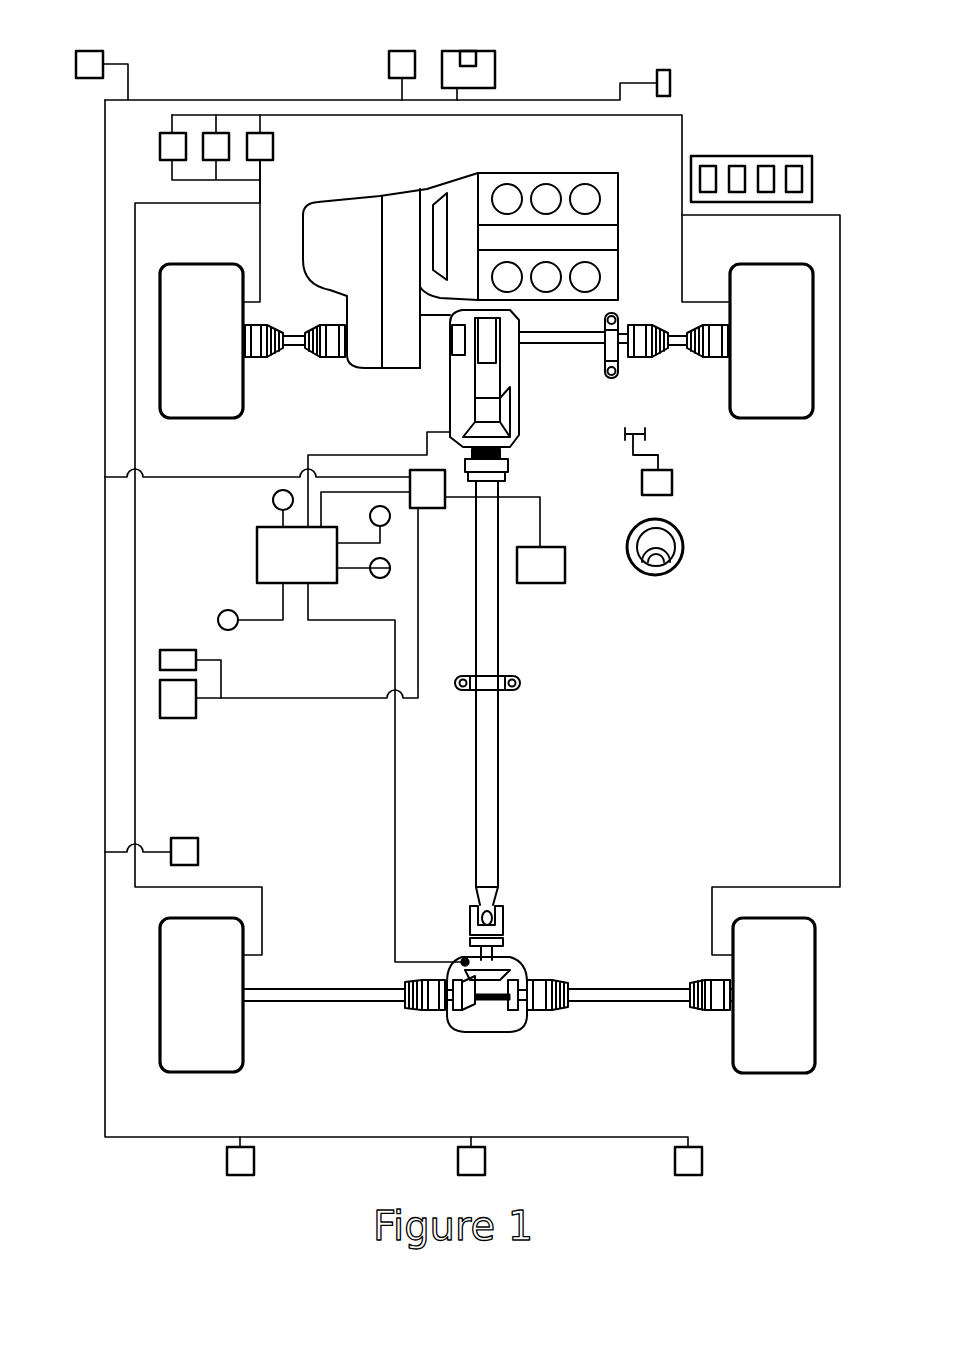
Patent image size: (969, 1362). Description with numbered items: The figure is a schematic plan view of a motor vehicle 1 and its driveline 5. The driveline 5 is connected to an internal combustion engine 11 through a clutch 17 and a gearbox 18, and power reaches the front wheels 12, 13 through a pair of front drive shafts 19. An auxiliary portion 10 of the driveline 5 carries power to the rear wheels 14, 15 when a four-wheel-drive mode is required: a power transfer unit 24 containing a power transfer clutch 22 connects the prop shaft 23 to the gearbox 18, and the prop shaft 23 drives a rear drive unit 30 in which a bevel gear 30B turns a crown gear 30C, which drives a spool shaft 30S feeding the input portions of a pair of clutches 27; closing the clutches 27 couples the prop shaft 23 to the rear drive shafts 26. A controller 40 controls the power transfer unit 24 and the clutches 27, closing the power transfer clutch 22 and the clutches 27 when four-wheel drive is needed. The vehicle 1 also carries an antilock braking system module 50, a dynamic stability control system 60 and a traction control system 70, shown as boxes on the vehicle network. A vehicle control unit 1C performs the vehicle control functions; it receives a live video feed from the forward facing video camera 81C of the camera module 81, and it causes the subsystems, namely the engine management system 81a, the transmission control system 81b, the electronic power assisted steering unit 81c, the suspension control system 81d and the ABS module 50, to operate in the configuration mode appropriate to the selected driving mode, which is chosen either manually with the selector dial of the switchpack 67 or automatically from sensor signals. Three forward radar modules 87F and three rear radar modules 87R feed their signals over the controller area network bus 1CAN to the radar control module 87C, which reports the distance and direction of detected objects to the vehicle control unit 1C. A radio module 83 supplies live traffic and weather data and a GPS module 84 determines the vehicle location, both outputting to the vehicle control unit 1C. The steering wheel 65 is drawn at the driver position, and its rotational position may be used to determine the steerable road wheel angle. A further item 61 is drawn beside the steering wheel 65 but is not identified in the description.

The motor vehicle 1 is at (730, 78).
The vehicle control unit 1C is at (432, 503).
The controller area network bus 1CAN is at (105, 320).
The driveline 5 is at (320, 734).
The auxiliary portion 10 is at (519, 405).
The internal combustion engine 11 is at (612, 187).
The front wheel 12 is at (200, 285).
The front wheel 13 is at (773, 285).
The rear wheel 14 is at (200, 1052).
The rear wheel 15 is at (773, 1045).
The clutch 17 is at (473, 247).
The gearbox 18 is at (403, 215).
The front drive shafts 19 is at (294, 345).
The power transfer clutch 22 is at (458, 342).
The prop shaft 23 is at (487, 625).
The power transfer unit 24 is at (520, 388).
The rear drive shafts 26 is at (355, 1001).
The clutches 27 is at (455, 1010).
The rear drive unit 30 is at (499, 1010).
The bevel gear 30B is at (510, 973).
The crown gear 30C is at (472, 1010).
The spool shaft 30S is at (488, 999).
The controller 40 is at (257, 548).
The antilock braking system module 50 is at (212, 137).
The dynamic stability control system 60 is at (263, 137).
The gear selector 61 is at (673, 484).
The steering wheel 65 is at (673, 562).
The switchpack 67 is at (556, 577).
The traction control system 70 is at (163, 145).
The camera module 81 is at (495, 70).
The forward facing video camera 81C is at (470, 51).
The engine management system 81a is at (707, 166).
The transmission control system 81b is at (737, 165).
The electronic power assisted steering unit 81c is at (765, 165).
The suspension control system 81d is at (795, 165).
The radio module 83 is at (178, 650).
The GPS module 84 is at (175, 718).
The radar control module 87C is at (182, 838).
The forward radar transmit/receive modules 87F is at (100, 51).
The rear radar transmit/receive modules 87R is at (227, 1158).